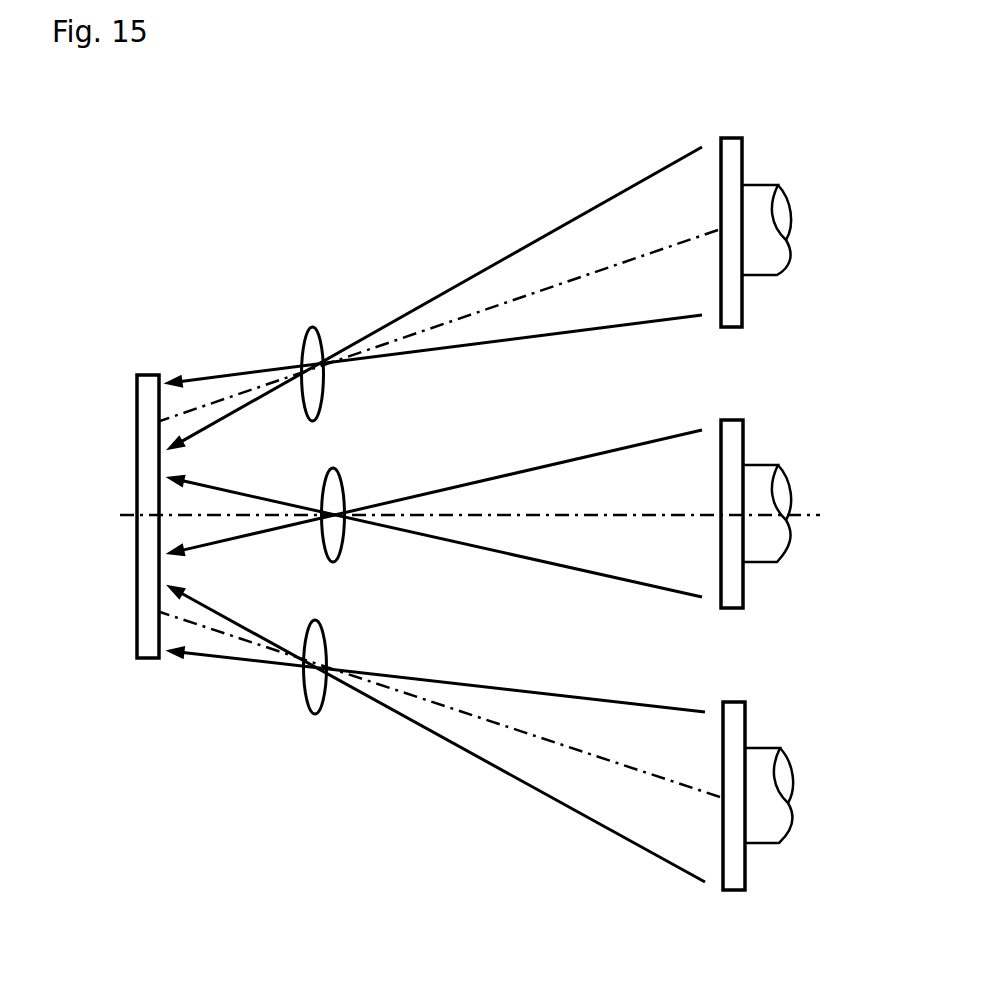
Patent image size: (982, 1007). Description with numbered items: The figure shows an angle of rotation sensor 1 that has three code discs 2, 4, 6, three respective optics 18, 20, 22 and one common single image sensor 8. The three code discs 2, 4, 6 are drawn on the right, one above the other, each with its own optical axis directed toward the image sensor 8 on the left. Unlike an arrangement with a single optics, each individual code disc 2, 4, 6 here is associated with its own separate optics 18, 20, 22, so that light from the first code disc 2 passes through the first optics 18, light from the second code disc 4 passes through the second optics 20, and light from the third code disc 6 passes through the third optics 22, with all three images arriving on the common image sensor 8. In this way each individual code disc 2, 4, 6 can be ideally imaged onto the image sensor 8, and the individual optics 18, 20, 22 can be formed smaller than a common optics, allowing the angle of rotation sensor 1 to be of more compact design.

The angle of rotation sensor 1 is at (413, 99).
The code disc 2 is at (733, 255).
The code disc 4 is at (735, 570).
The code disc 6 is at (733, 872).
The image sensor 8 is at (148, 637).
The optics 18 is at (313, 385).
The optics 20 is at (335, 527).
The optics 22 is at (317, 682).